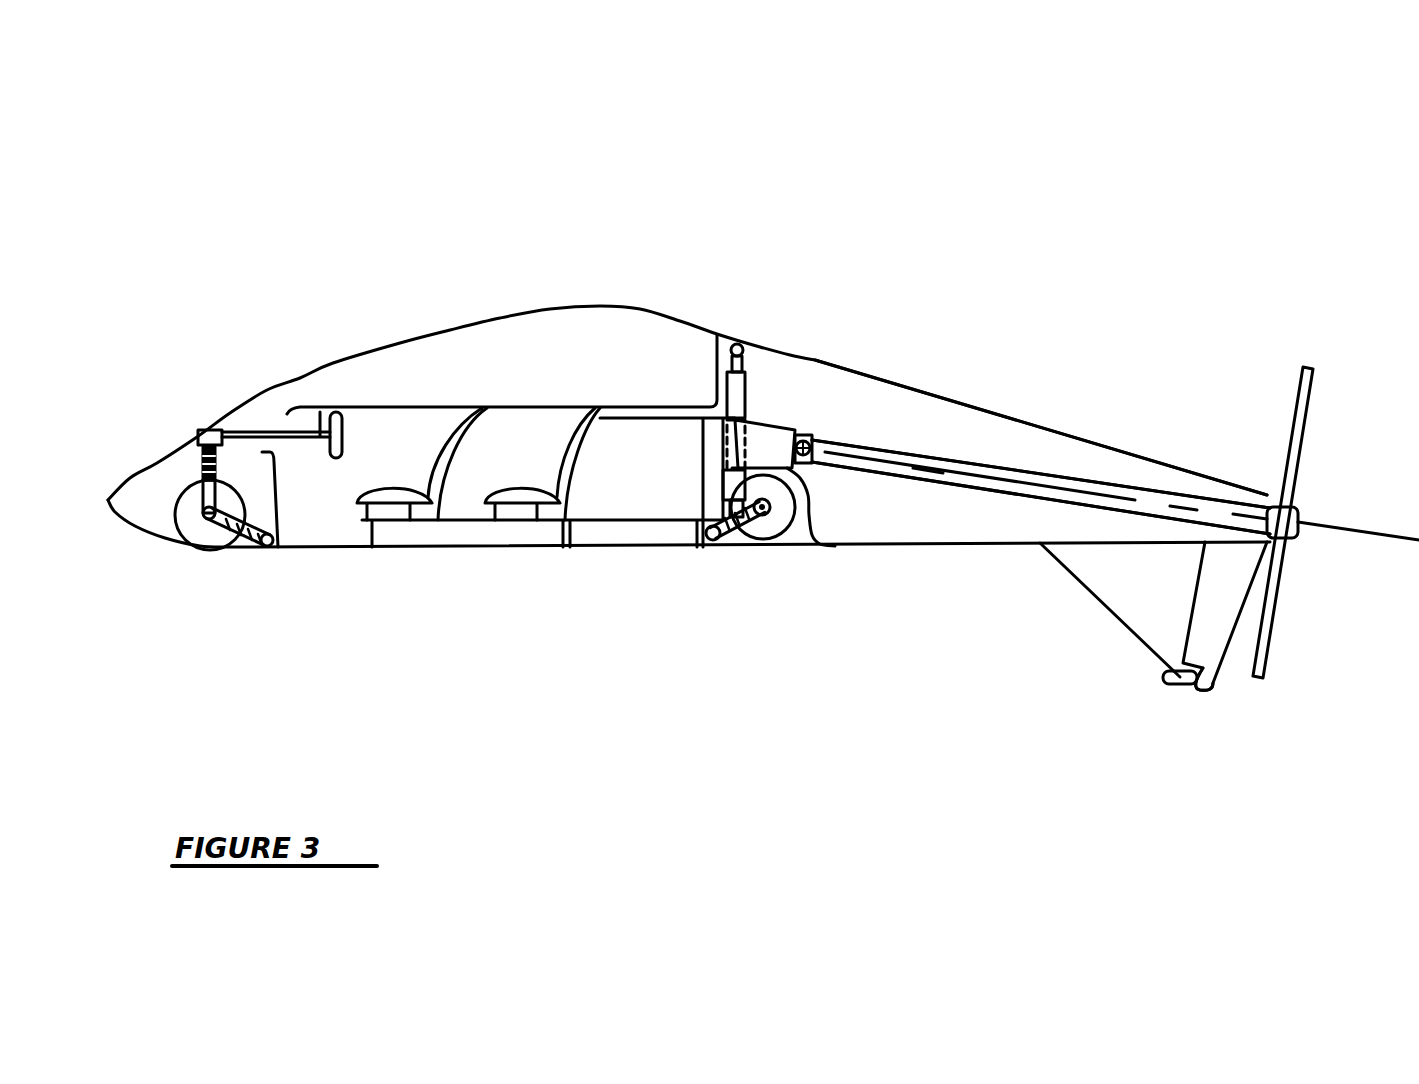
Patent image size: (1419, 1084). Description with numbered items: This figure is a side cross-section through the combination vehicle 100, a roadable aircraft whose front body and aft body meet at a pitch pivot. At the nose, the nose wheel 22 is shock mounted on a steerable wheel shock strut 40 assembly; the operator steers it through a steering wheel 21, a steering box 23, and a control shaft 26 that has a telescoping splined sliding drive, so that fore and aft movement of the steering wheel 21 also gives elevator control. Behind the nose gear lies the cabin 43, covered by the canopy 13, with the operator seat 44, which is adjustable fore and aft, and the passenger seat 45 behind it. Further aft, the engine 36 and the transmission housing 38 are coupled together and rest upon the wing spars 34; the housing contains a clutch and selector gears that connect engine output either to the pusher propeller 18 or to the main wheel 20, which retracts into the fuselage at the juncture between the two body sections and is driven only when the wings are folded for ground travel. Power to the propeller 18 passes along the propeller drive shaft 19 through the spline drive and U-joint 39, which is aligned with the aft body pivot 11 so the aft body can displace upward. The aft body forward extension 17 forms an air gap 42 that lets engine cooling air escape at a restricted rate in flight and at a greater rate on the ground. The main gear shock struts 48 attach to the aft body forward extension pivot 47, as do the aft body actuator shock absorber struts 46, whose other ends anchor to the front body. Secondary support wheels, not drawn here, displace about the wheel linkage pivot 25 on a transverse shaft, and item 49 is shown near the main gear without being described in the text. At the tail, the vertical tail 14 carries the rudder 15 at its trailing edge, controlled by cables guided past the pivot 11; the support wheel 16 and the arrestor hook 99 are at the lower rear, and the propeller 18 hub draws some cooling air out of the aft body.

The combination vehicle 100 is at (583, 290).
The canopy 13 is at (507, 316).
The steering wheel 21 is at (338, 407).
The control shaft 26 is at (247, 392).
The steering box 23 is at (203, 422).
The steerable wheel shock strut 40 is at (203, 469).
The nose wheel 22 is at (203, 550).
The wheel linkage pivot 25 is at (265, 550).
The cabin 43 is at (342, 523).
The operator seat 44 is at (407, 527).
The passenger seat 45 is at (527, 525).
The wing spars 34 is at (570, 548).
The engine 36 is at (627, 495).
The aft body actuator shock absorber struts 46 is at (723, 385).
The aft body forward extension pivot 47 is at (725, 438).
The main gear shock struts 48 is at (723, 483).
The main wheel axle arm 49 is at (760, 548).
The main wheel 20 is at (792, 545).
The air gap 42 is at (780, 422).
The aft body forward extension 17 is at (747, 422).
The transmission housing 38 is at (777, 423).
The aft body pivot 11 is at (818, 437).
The spline drive and U-joint 39 is at (818, 437).
The propeller drive shaft 19 is at (978, 467).
The vertical tail 14 is at (1107, 570).
The rudder 15 is at (1190, 608).
The arrestor hook 99 is at (1170, 675).
The support wheel 16 is at (1187, 687).
The propeller 18 is at (1267, 663).